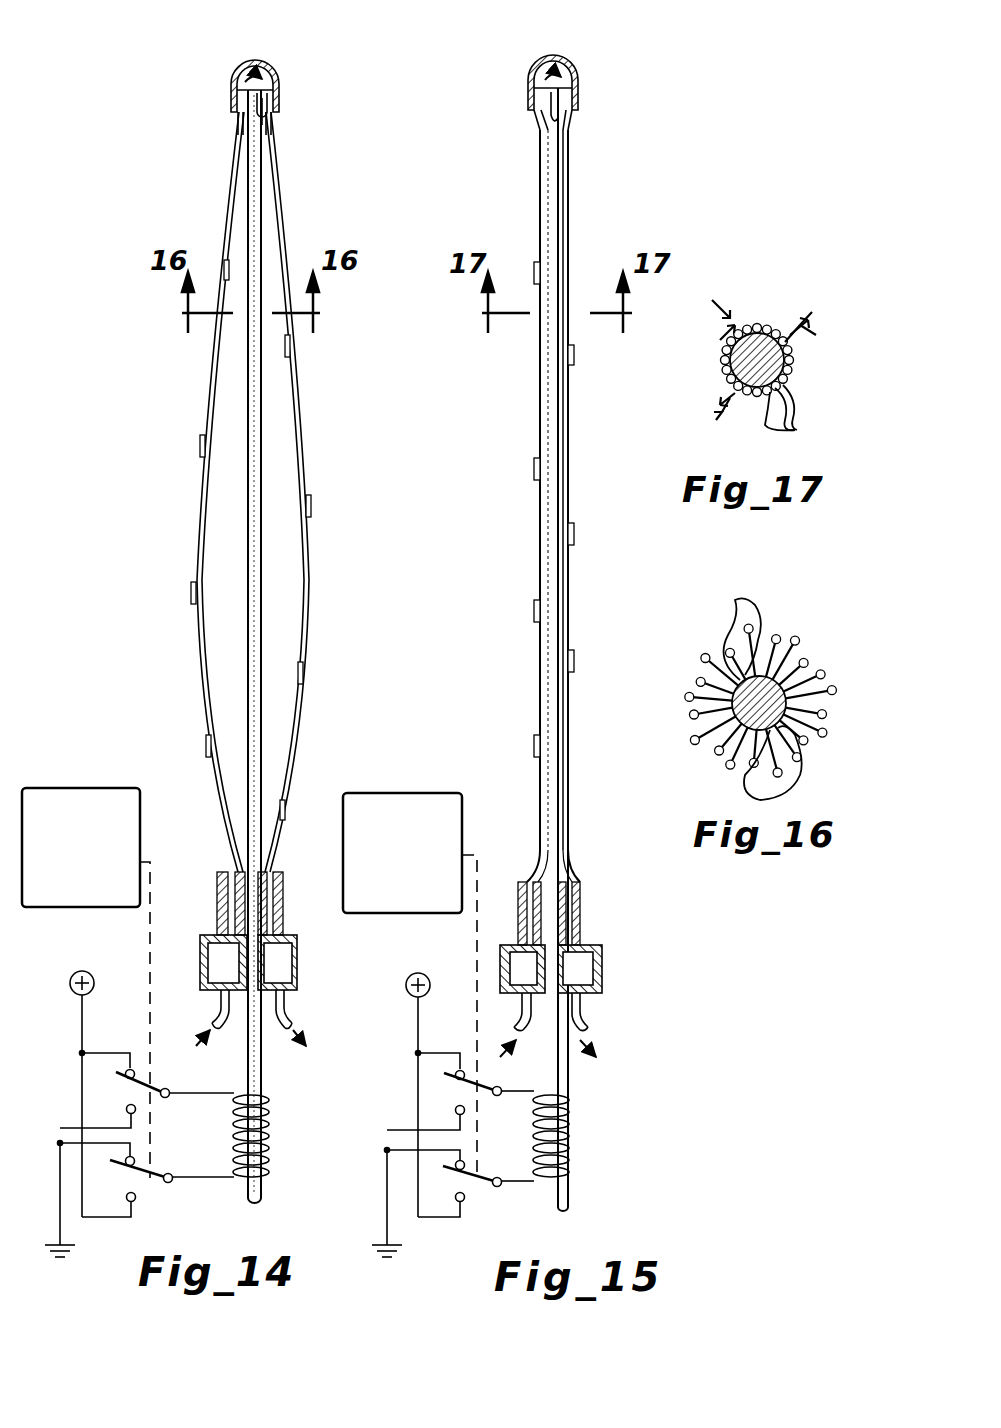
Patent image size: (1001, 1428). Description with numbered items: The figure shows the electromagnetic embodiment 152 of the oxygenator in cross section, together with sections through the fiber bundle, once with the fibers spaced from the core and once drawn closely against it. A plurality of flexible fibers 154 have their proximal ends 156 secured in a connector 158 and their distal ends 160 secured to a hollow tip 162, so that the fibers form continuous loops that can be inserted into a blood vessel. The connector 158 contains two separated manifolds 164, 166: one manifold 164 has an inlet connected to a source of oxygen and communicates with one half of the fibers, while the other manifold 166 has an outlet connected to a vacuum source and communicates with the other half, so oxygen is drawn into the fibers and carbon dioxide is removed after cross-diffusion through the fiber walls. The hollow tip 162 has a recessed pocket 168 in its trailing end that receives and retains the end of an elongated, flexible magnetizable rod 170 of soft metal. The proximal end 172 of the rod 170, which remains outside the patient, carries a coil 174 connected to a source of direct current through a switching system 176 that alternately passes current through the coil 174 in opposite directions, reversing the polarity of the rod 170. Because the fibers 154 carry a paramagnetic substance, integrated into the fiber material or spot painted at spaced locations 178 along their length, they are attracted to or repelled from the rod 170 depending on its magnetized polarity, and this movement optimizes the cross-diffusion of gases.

In FIG. 14, the electromagnetic embodiment of the oxygenator 152 is at (126, 572).
In FIG. 14, the fibers 154 is at (212, 400).
In FIG. 15, the fibers 154 is at (539, 370).
In FIG. 17, the fibers 154 is at (783, 373).
In FIG. 16, the fibers 154 is at (738, 620).
In FIG. 14, the proximal ends of the fibers 156 is at (210, 935).
In FIG. 15, the proximal ends of the fibers 156 is at (549, 913).
In FIG. 14, the connector 158 is at (300, 858).
In FIG. 15, the connector 158 is at (580, 885).
In FIG. 14, the distal ends of the fibers 160 is at (238, 118).
In FIG. 15, the distal ends of the fibers 160 is at (535, 118).
In FIG. 14, the hollow tip 162 is at (268, 62).
In FIG. 15, the hollow tip 162 is at (575, 65).
In FIG. 14, the manifold 164 is at (280, 965).
In FIG. 15, the manifold 164 is at (585, 968).
In FIG. 14, the manifold 166 is at (222, 965).
In FIG. 15, the manifold 166 is at (518, 960).
In FIG. 14, the recessed pocket 168 is at (265, 112).
In FIG. 15, the recessed pocket 168 is at (560, 140).
In FIG. 14, the magnetizable rod 170 is at (262, 187).
In FIG. 15, the magnetizable rod 170 is at (556, 412).
In FIG. 17, the magnetizable rod 170 is at (757, 333).
In FIG. 16, the magnetizable rod 170 is at (735, 708).
In FIG. 14, the proximal end of the rod 172 is at (258, 1196).
In FIG. 14, the coil 174 is at (268, 1112).
In FIG. 15, the coil 174 is at (570, 1145).
In FIG. 14, the switching system 176 is at (62, 1092).
In FIG. 15, the switching system 176 is at (407, 1105).
In FIG. 14, the spaced locations 178 is at (224, 265).
In FIG. 15, the spaced locations 178 is at (575, 540).